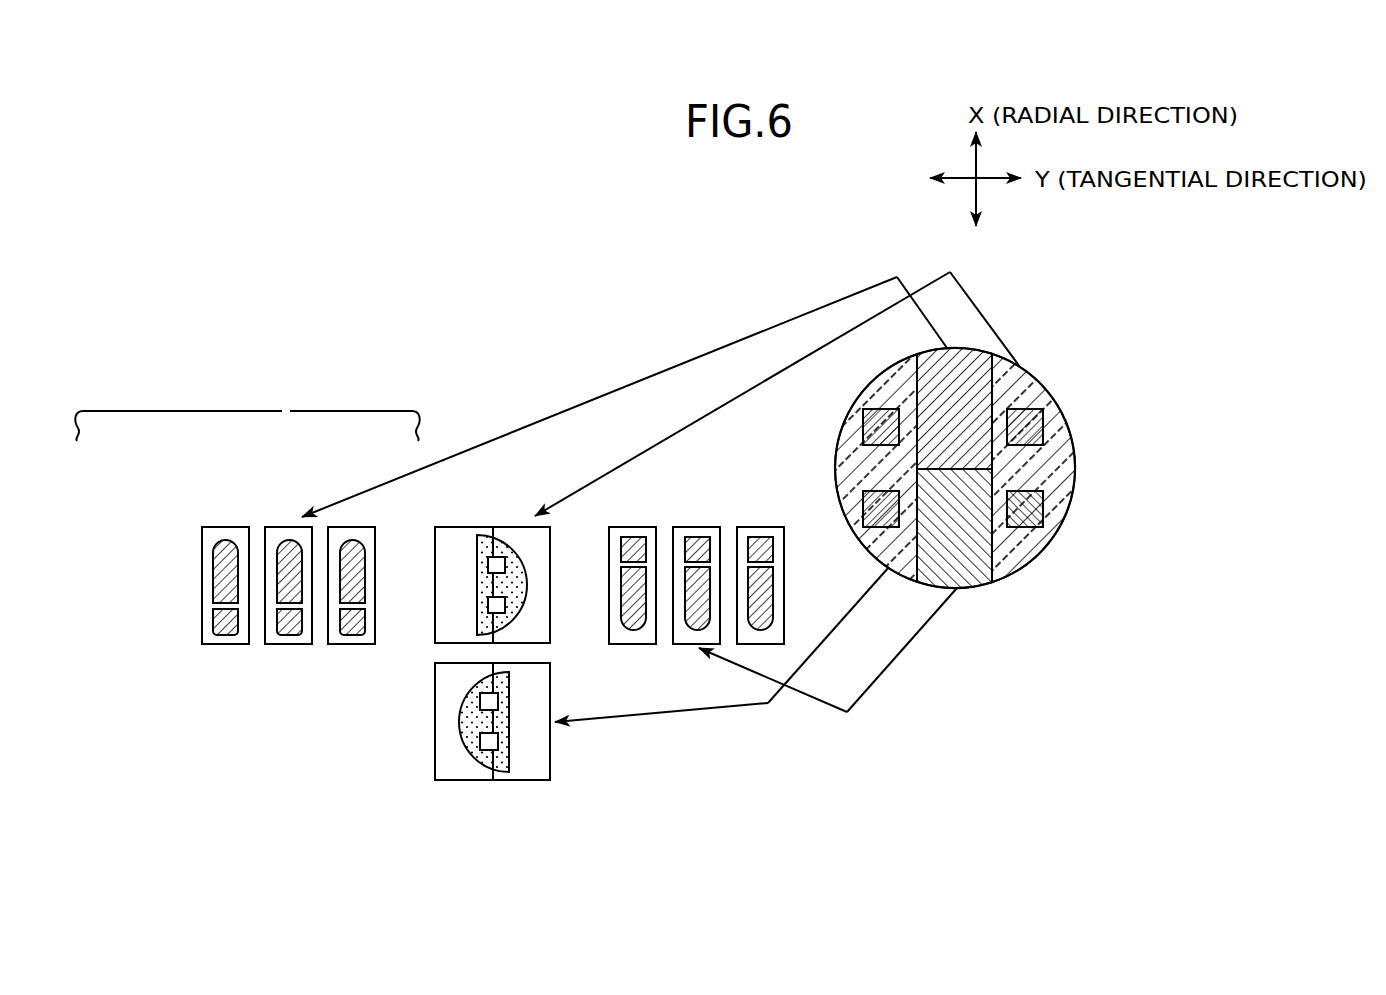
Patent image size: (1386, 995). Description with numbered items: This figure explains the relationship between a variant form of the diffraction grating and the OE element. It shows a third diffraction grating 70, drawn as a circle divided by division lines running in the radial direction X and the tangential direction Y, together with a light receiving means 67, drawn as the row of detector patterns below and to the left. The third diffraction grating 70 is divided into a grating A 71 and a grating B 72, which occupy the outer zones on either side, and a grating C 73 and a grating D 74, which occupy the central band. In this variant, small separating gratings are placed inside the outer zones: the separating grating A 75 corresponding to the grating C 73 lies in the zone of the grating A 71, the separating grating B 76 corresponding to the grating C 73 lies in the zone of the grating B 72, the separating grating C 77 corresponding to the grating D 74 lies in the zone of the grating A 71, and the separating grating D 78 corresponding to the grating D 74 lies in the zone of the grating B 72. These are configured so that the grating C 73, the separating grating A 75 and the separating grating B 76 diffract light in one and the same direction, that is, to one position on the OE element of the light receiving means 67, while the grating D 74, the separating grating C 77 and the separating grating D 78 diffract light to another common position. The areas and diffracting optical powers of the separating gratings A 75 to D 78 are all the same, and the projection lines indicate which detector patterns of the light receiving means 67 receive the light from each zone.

The light receiving means 67 is at (282, 416).
The third diffraction grating 70 is at (1030, 349).
The grating A 71 is at (1066, 472).
The grating B 72 is at (840, 472).
The grating C 73 is at (975, 589).
The grating D 74 is at (946, 350).
The separating grating A 75 is at (1032, 528).
The separating grating B 76 is at (873, 528).
The separating grating C 77 is at (1031, 407).
The separating grating D 78 is at (875, 407).